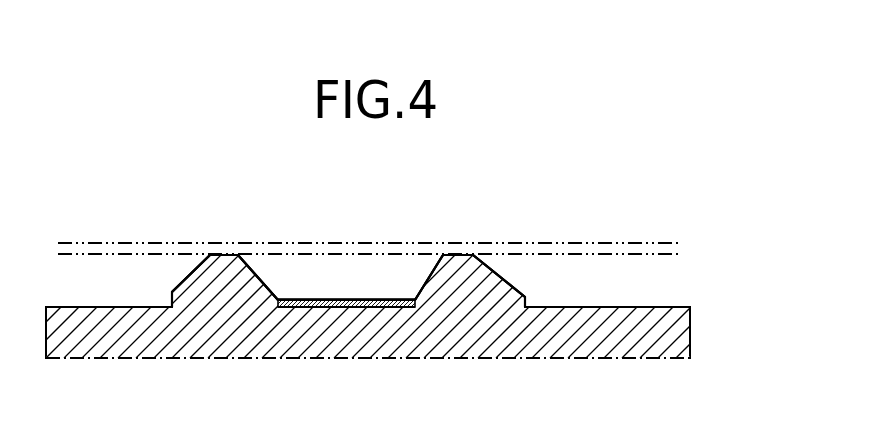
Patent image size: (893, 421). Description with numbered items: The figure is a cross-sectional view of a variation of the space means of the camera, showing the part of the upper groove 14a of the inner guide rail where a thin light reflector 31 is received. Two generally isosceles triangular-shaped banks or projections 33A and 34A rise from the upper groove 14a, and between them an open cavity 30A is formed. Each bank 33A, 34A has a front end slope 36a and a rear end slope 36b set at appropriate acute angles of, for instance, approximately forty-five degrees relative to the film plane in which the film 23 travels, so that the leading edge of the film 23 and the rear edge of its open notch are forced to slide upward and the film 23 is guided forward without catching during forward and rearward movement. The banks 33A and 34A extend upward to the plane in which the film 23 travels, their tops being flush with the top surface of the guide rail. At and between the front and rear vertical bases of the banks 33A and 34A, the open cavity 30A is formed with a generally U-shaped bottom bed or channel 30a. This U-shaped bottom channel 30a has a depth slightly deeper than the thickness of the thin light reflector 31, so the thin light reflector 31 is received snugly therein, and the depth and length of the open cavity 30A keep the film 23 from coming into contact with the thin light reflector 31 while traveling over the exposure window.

The upper groove 14a is at (645, 280).
The bank 34A is at (229, 255).
The bank 33A is at (475, 255).
The front end slope 36a is at (265, 272).
The rear end slope 36b is at (192, 270).
The open cavity 30A is at (354, 272).
The U-shaped bottom channel 30a is at (415, 307).
The thin light reflector 31 is at (305, 307).
The film 23 is at (634, 242).